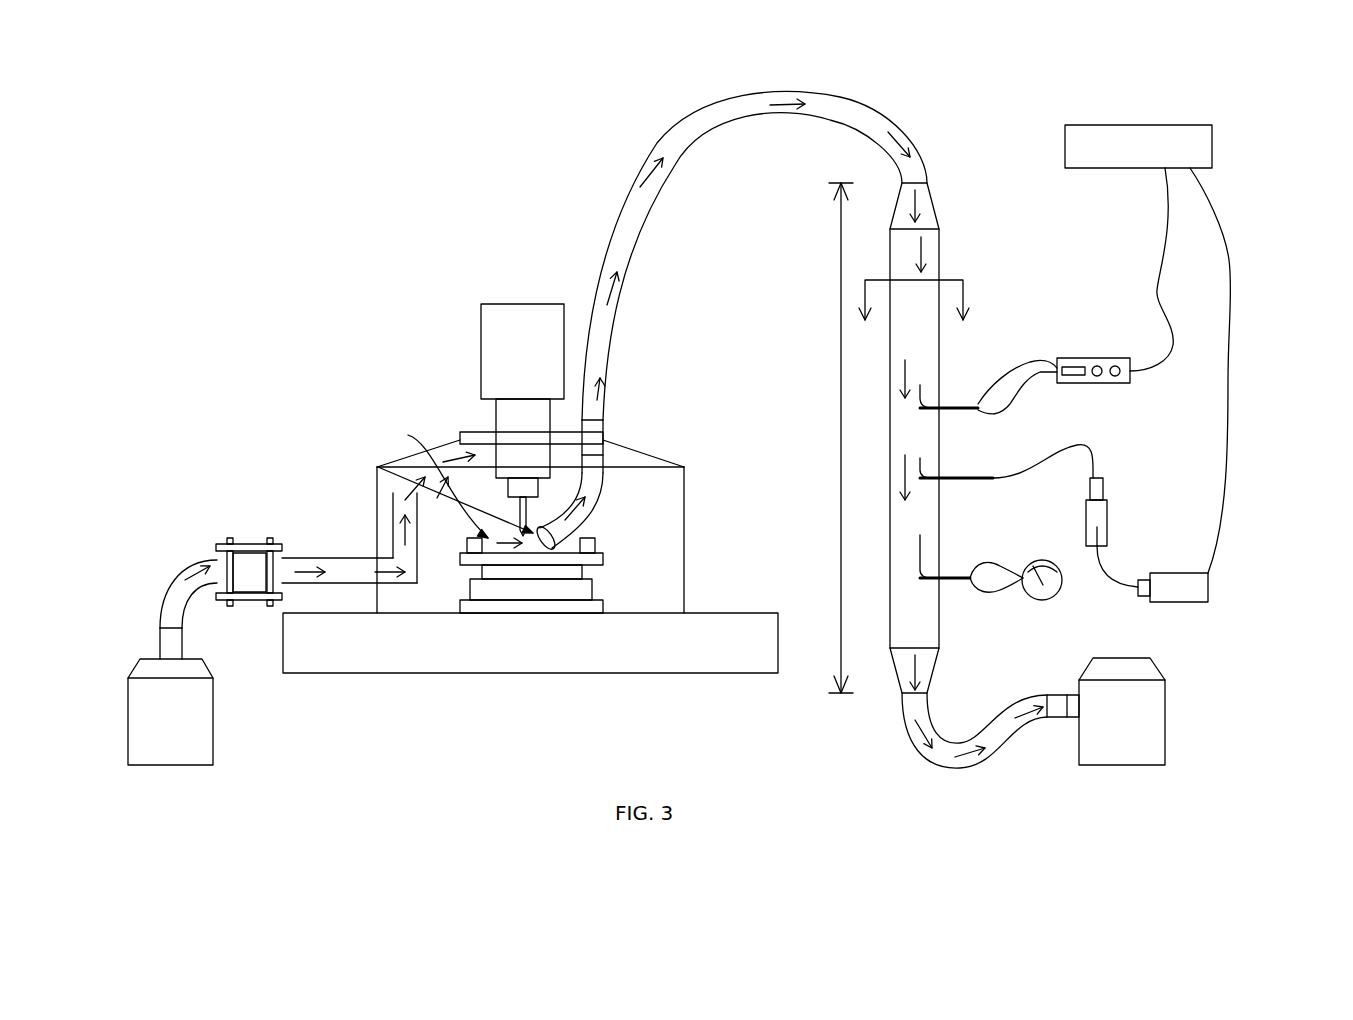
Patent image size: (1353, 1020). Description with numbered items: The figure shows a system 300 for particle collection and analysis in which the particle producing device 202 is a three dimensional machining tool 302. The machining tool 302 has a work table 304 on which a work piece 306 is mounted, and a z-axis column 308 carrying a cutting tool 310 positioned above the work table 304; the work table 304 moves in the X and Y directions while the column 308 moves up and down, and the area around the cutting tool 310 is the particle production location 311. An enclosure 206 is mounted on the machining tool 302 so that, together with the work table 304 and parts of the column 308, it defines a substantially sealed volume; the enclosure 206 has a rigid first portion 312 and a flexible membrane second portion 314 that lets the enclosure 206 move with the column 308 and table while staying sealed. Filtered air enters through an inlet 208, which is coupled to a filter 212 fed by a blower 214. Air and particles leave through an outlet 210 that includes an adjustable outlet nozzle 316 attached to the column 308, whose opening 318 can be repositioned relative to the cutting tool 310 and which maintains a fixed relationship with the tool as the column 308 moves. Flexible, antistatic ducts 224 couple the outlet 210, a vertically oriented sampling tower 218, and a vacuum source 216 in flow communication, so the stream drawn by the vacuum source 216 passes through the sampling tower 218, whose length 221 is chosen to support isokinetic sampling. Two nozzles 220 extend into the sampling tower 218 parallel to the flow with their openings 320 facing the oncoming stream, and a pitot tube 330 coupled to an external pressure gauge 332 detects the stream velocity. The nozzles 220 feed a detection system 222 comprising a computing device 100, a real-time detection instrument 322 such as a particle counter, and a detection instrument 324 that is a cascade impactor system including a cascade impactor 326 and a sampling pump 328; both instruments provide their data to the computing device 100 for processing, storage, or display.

The computing device 100 is at (1158, 157).
The particle producing device 202 is at (450, 697).
The three dimensional machining tool 302 is at (450, 697).
The enclosure 206 is at (372, 590).
The inlet 208 is at (393, 498).
The outlet 210 is at (568, 540).
The filter 212 is at (257, 543).
The blower 214 is at (213, 740).
The vacuum source 216 is at (1168, 738).
The sampling tower 218 is at (939, 632).
The nozzle 220 is at (931, 410).
The length 221 is at (836, 468).
The detection system 222 is at (1245, 180).
The ducts 224 is at (205, 578).
The system 300 is at (320, 225).
The work table 304 is at (340, 677).
The work piece 306 is at (590, 572).
The z-axis column 308 is at (512, 302).
The cutting tool 310 is at (520, 505).
The particle production location 311 is at (378, 466).
The first portion 312 is at (692, 583).
The second portion 314 is at (652, 452).
The adjustable outlet nozzle 316 is at (606, 485).
The opening 318 is at (429, 481).
The openings 320 is at (928, 378).
The detection instrument 322 is at (1093, 358).
The detection instrument 324 is at (1140, 468).
The cascade impactor 326 is at (1108, 512).
The sampling pump 328 is at (1178, 573).
The pitot tube 330 is at (930, 585).
The pressure gauge 332 is at (1042, 560).